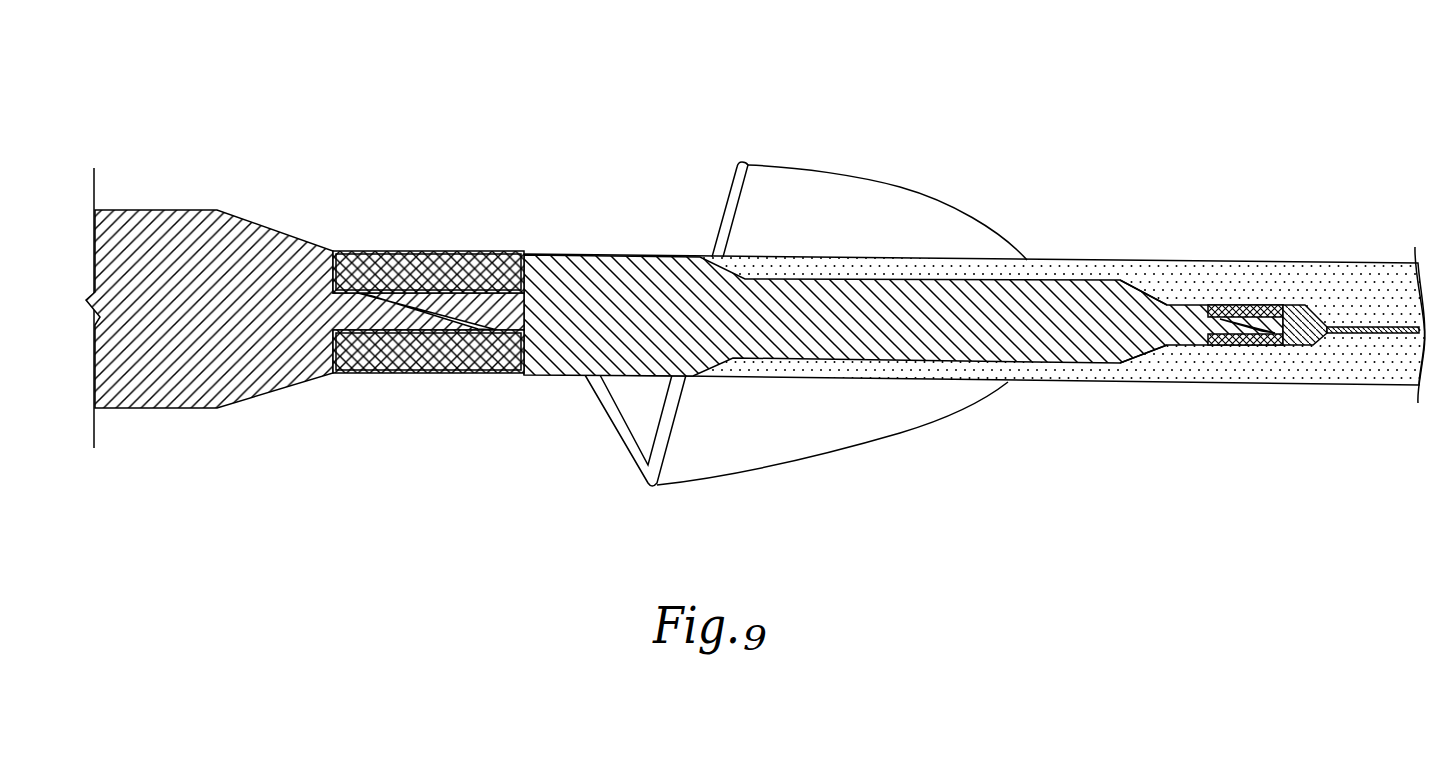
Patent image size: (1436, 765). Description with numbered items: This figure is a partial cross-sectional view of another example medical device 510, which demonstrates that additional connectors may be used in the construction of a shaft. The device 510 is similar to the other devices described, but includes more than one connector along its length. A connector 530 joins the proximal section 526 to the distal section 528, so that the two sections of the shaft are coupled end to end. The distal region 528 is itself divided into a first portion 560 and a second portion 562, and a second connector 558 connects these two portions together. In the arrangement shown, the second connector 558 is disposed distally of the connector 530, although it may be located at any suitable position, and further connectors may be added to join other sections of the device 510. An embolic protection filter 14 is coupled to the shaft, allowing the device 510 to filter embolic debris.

The embolic protection filter 14 is at (741, 158).
The device 510 is at (752, 262).
The proximal section 526 is at (183, 277).
The distal section 528 is at (897, 323).
The connector 530 is at (410, 268).
The second connector 558 is at (1233, 347).
The first portion 560 is at (1140, 318).
The second portion 562 is at (1305, 323).